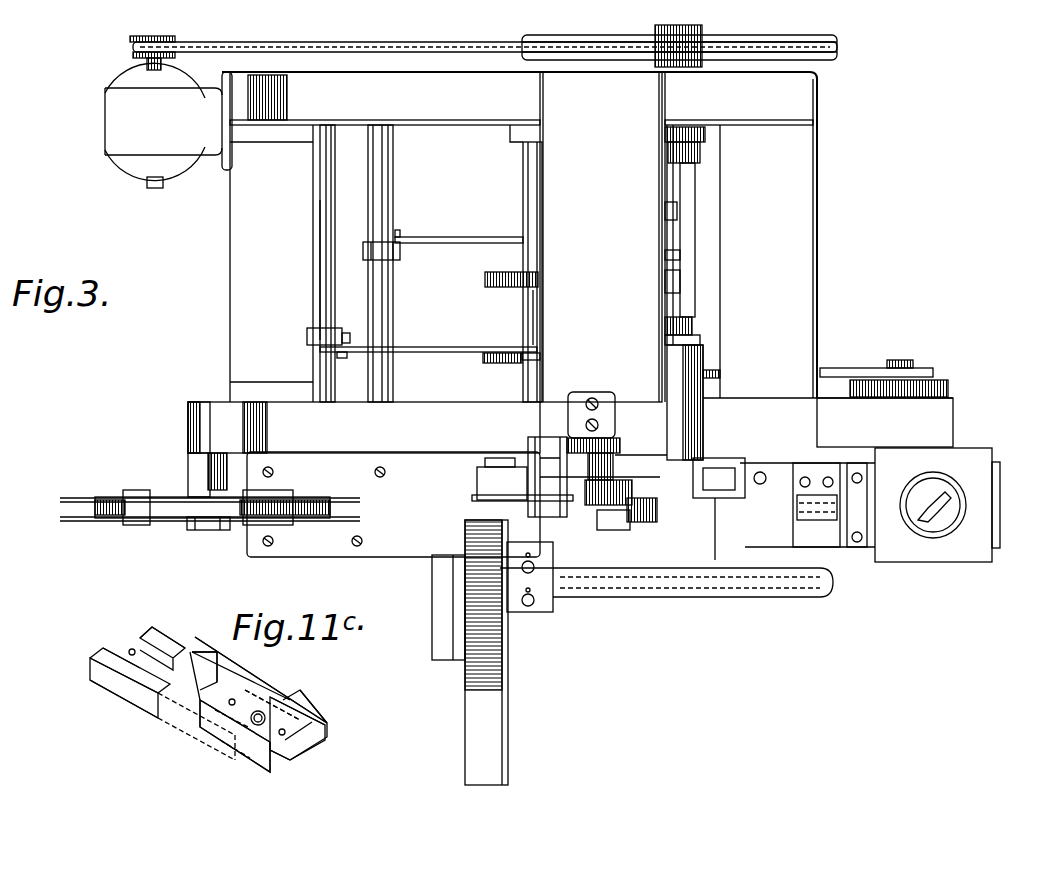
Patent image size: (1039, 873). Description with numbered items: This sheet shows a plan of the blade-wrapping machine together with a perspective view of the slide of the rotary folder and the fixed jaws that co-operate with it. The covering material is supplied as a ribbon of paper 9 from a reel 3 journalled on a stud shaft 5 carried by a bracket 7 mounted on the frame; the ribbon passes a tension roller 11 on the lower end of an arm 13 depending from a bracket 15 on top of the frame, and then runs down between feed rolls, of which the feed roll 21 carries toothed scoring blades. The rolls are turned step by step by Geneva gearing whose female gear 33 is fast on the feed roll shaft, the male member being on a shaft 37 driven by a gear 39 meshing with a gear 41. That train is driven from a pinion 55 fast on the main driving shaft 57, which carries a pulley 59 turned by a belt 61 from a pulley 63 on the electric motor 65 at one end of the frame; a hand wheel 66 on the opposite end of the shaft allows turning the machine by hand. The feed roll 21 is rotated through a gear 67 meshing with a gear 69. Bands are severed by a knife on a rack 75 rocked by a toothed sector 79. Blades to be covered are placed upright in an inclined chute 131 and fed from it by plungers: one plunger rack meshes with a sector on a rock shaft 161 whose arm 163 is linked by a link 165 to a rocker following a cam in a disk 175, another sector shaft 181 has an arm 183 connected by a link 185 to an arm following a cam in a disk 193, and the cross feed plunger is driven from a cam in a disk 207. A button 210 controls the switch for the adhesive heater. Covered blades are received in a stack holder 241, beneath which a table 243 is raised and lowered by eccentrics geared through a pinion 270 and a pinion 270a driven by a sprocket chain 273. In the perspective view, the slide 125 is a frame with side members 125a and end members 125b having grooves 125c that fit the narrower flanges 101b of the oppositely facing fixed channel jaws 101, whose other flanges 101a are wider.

In FIG. 3, the reel 3 is at (185, 522).
In FIG. 3, the stud shaft 5 is at (212, 530).
In FIG. 3, the bracket 7 is at (188, 437).
In FIG. 3, the ribbon of paper 9 is at (378, 509).
In FIG. 3, the roller 11 is at (480, 497).
In FIG. 3, the arm 13 is at (530, 450).
In FIG. 3, the bracket 15 is at (568, 420).
In FIG. 3, the feed roll 21 is at (610, 490).
In FIG. 3, the female gear 33 is at (536, 368).
In FIG. 3, the shaft 37 is at (538, 316).
In FIG. 3, the gear 39 is at (538, 281).
In FIG. 3, the gear 41 is at (665, 278).
In FIG. 3, the pinion 55 is at (705, 136).
In FIG. 3, the main driving shaft 57 is at (695, 180).
In FIG. 3, the pulley 59 is at (552, 45).
In FIG. 3, the belt 61 is at (392, 48).
In FIG. 3, the pulley 63 is at (157, 42).
In FIG. 3, the electric motor 65 is at (135, 77).
In FIG. 3, the hand wheel 66 is at (758, 597).
In FIG. 3, the gear 67 is at (600, 505).
In FIG. 3, the gear 69 is at (500, 480).
In FIG. 3, the rack 75 is at (640, 522).
In FIG. 3, the toothed sector 79 is at (712, 530).
In FIG. 3, the chute 131 is at (495, 728).
In FIG. 3, the rock shaft 161 is at (320, 305).
In FIG. 3, the arm 163 is at (307, 336).
In FIG. 3, the link 165 is at (425, 348).
In FIG. 3, the disk 175 is at (692, 327).
In FIG. 3, the shaft 181 is at (390, 288).
In FIG. 3, the arm 183 is at (400, 256).
In FIG. 3, the link 185 is at (444, 236).
In FIG. 3, the disk 193 is at (677, 207).
In FIG. 3, the disk 207 is at (680, 253).
In FIG. 3, the button 210 is at (950, 505).
In FIG. 3, the stack holder 241 is at (832, 492).
In FIG. 3, the table 243 is at (855, 547).
In FIG. 3, the pinion 270 is at (950, 385).
In FIG. 3, the pinion 270a is at (920, 352).
In FIG. 3, the sprocket chain 273 is at (718, 370).
In FIG. 11C, the fixed channel shaped jaws 101 is at (325, 725).
In FIG. 11C, the flange 101a is at (265, 762).
In FIG. 11C, the flange 101b is at (327, 735).
In FIG. 11C, the slide 125 is at (200, 722).
In FIG. 11C, the side members 125a is at (205, 708).
In FIG. 11C, the end members 125b is at (255, 768).
In FIG. 11C, the grooves 125c is at (305, 690).